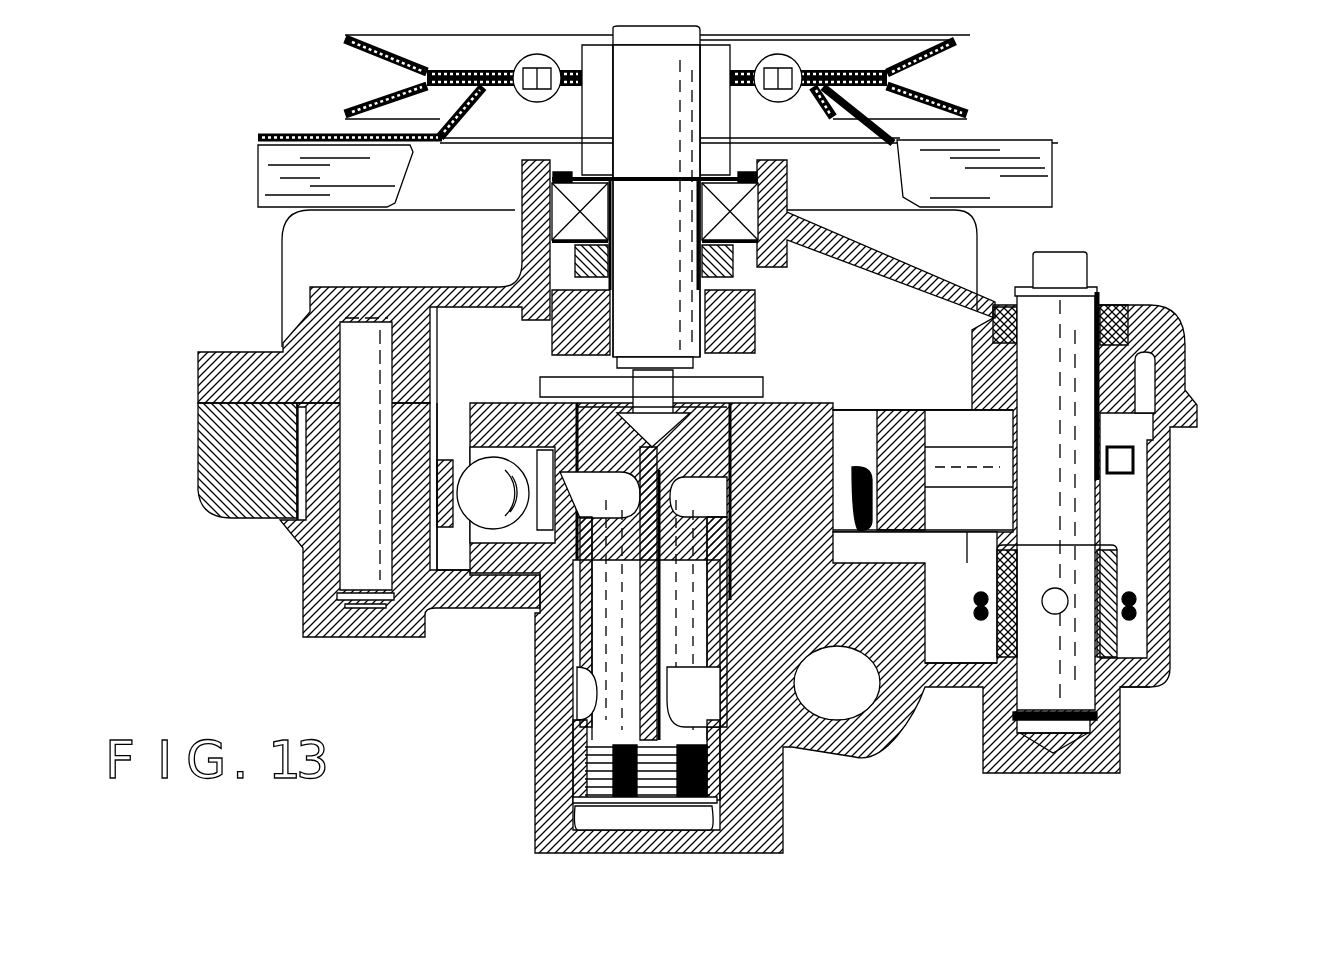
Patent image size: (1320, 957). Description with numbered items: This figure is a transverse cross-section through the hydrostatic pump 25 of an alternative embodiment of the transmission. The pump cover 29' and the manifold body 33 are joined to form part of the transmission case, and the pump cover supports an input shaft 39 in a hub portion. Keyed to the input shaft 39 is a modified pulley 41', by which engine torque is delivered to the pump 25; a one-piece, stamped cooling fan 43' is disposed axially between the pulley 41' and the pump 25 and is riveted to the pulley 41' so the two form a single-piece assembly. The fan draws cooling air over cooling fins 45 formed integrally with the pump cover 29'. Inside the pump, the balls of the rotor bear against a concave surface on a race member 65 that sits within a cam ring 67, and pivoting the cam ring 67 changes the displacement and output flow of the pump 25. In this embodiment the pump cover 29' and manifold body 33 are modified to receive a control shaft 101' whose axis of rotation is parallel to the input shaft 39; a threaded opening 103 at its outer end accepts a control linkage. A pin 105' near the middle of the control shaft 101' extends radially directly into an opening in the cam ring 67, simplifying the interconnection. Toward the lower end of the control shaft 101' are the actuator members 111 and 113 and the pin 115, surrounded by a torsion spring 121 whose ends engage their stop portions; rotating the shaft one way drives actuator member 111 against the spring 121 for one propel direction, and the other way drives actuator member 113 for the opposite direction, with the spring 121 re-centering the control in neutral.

The hydrostatic pump 25 is at (250, 319).
The pump cover 29' is at (861, 575).
The manifold body 33 is at (1150, 668).
The input shaft 39 is at (680, 320).
The modified pulley 41' is at (689, 100).
The stamped cooling fan 43' is at (658, 136).
The cooling fins 45 is at (312, 237).
The race member 65 is at (862, 470).
The cam ring 67 is at (905, 430).
The modified control shaft 101' is at (1094, 494).
The threaded opening 103 is at (1060, 255).
The modified pin 105' is at (1181, 460).
The actuator member 111 is at (993, 643).
The actuator member 113 is at (1120, 560).
The pin 115 is at (1055, 615).
The torsion spring 121 is at (1145, 600).